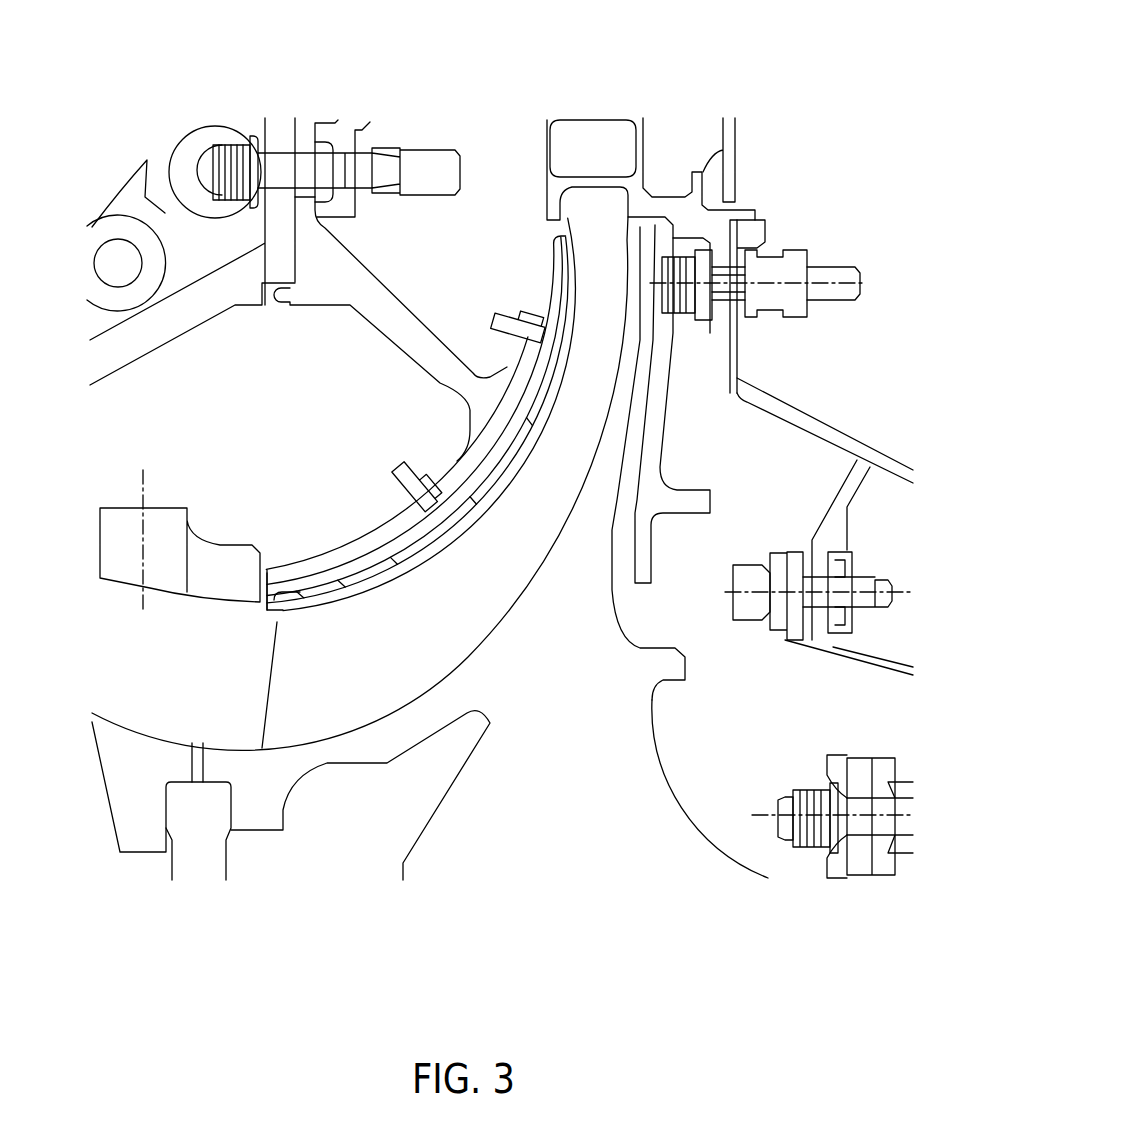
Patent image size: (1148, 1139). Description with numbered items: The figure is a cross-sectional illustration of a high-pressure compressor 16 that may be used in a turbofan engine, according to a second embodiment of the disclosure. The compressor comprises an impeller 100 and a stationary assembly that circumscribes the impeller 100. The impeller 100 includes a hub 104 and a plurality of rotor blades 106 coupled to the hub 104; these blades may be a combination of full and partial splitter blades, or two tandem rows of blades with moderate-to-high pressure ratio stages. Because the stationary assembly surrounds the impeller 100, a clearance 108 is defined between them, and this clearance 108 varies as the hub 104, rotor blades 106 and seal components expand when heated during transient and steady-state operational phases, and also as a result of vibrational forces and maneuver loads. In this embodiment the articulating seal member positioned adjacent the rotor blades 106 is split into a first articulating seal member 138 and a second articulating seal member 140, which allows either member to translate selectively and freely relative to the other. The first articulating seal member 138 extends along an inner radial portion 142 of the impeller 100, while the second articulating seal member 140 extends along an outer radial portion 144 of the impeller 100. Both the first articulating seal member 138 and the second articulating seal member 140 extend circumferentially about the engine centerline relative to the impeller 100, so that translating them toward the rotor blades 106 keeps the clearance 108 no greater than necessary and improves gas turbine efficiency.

The high-pressure compressor 16 is at (416, 96).
The impeller 100 is at (657, 897).
The hub 104 is at (657, 789).
The rotor blades 106 is at (360, 483).
The clearance 108 is at (268, 620).
The first articulating seal member 138 is at (317, 600).
The second articulating seal member 140 is at (560, 270).
The inner radial portion 142 is at (337, 627).
The outer radial portion 144 is at (598, 302).